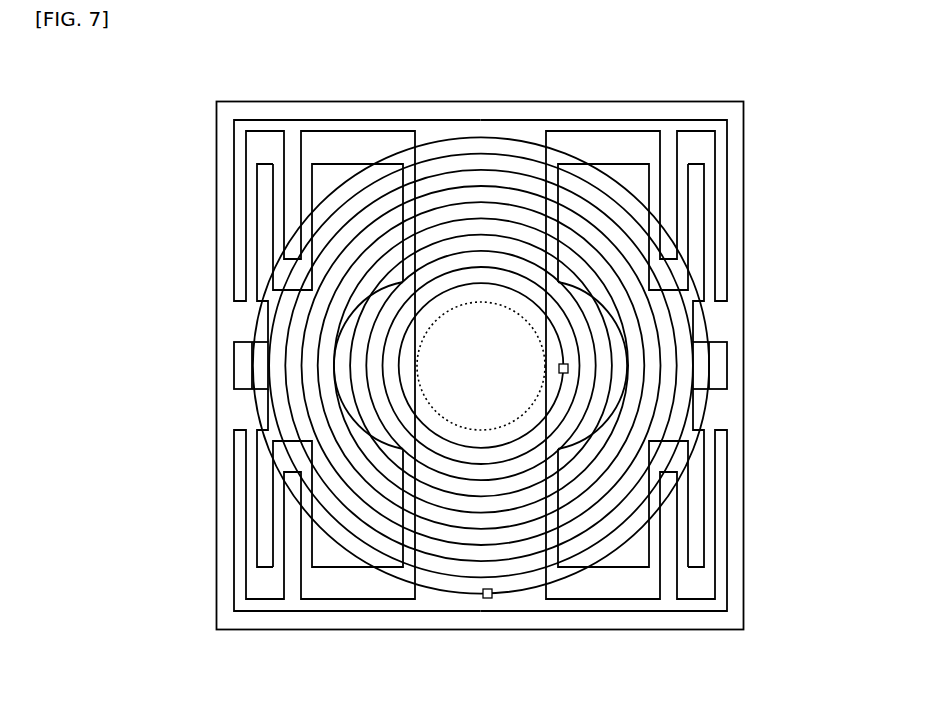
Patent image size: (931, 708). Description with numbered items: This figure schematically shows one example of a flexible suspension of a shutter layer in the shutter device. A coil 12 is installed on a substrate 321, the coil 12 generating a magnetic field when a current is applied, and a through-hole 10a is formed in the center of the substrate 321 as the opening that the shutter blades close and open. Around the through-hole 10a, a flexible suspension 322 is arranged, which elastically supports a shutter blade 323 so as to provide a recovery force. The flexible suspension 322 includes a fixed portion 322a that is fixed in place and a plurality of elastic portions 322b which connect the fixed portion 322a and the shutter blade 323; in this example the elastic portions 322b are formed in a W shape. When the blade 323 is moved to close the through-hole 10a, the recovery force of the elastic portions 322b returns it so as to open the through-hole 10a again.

The through-hole 10a is at (497, 303).
The coil 12 is at (645, 518).
The substrate 321 is at (486, 632).
The electrode 322 is at (112, 183).
The electrode connection portion 322a is at (247, 320).
The elastic portions 322b is at (250, 198).
The inner electrode portion 323 is at (346, 370).